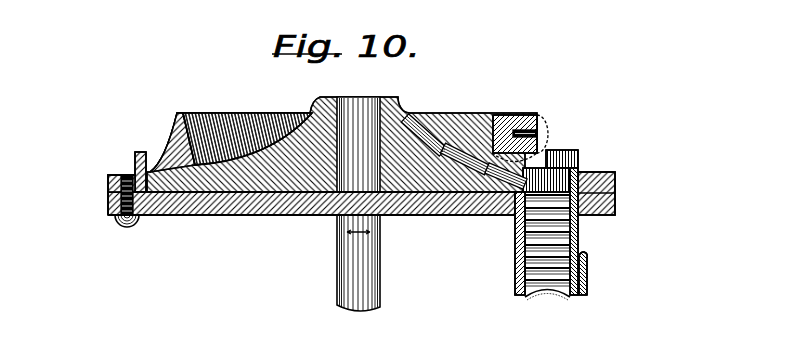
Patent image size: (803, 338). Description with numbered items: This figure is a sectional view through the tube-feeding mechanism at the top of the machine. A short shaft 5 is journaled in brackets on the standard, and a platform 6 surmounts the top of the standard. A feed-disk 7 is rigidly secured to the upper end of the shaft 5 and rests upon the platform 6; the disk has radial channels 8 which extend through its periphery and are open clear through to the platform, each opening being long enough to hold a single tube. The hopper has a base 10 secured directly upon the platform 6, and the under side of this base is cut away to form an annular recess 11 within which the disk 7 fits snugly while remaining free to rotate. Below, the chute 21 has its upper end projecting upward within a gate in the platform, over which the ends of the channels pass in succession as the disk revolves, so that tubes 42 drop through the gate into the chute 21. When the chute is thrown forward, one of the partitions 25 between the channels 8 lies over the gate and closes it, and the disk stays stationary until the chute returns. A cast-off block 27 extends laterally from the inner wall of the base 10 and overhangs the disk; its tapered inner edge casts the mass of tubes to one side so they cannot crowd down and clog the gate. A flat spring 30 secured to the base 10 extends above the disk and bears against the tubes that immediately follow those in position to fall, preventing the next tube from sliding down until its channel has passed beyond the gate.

The short shaft 5 is at (360, 253).
The platform 6 is at (240, 212).
The feed-disk 7 is at (278, 148).
The radial channels 8 is at (437, 150).
The hopper-base 10 is at (135, 152).
The annular recess 11 is at (146, 172).
The chute 21 is at (515, 246).
The partitions 25 is at (167, 173).
The cast-off block 27 is at (510, 123).
The flat spring 30 is at (548, 180).
The tubes 42 is at (578, 240).